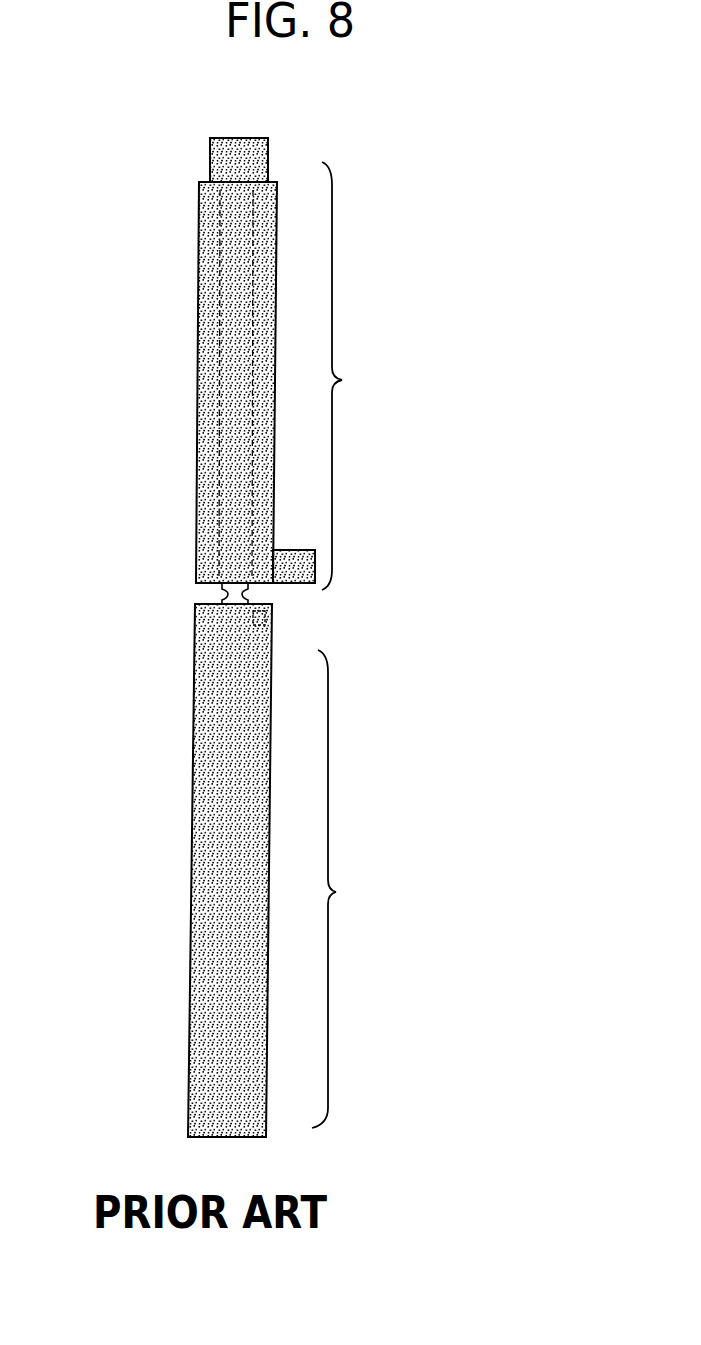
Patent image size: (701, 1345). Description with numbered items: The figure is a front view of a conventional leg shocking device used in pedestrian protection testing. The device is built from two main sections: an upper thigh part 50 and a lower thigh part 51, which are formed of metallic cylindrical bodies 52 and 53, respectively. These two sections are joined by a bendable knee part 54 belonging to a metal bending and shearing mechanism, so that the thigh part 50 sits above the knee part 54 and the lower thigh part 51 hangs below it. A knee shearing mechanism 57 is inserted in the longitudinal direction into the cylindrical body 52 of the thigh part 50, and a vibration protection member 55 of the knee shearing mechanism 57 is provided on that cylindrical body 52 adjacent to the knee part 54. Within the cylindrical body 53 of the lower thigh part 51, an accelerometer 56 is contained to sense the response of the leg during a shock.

The thigh part 50 is at (351, 376).
The lower thigh part 51 is at (341, 889).
The cylindrical body 52 is at (201, 272).
The cylindrical body 53 is at (196, 763).
The knee part 54 is at (223, 593).
The vibration protection member 55 is at (285, 574).
The accelerometer 56 is at (275, 620).
The knee shearing mechanism 57 is at (237, 221).